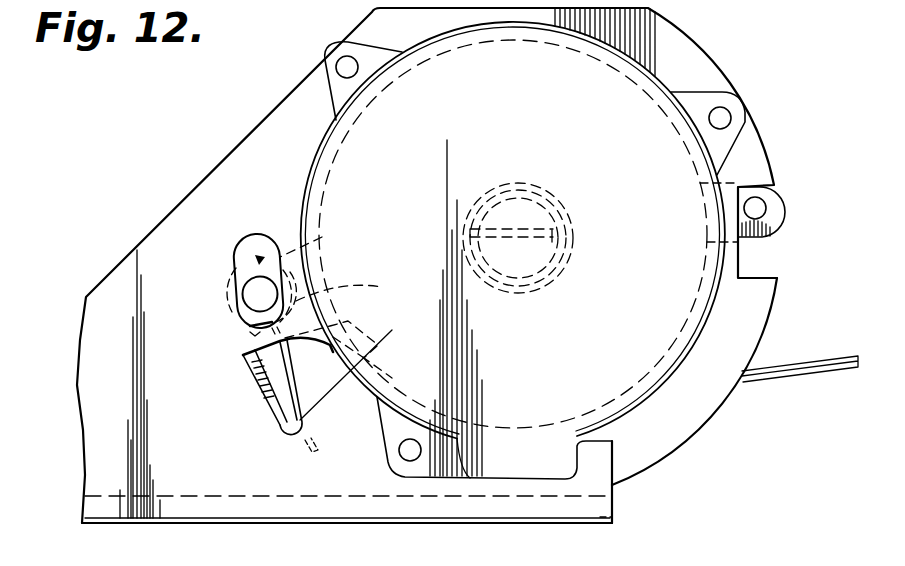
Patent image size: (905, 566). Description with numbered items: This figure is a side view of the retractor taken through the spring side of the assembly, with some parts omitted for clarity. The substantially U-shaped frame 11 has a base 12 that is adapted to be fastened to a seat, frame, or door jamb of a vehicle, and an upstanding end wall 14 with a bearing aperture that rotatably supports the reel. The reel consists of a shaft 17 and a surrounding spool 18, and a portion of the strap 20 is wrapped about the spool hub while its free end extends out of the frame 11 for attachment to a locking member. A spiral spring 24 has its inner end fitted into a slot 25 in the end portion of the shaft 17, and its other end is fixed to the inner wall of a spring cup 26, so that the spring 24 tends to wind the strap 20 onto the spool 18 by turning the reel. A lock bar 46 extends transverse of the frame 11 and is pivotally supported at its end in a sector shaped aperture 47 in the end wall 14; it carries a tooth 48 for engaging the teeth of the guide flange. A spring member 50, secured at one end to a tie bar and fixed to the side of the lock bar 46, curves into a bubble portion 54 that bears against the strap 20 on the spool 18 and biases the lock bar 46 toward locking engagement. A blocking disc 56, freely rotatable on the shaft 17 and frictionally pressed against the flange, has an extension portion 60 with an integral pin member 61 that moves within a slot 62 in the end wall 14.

The frame 11 is at (563, 523).
The base 12 is at (298, 522).
The end wall 14 is at (693, 78).
The shaft 17 is at (533, 262).
The spool 18 is at (430, 562).
The strap 20 is at (795, 382).
The spiral spring 24 is at (537, 182).
The slot 25 is at (560, 236).
The spring cup 26 is at (654, 400).
The lock bar 46 is at (297, 377).
The sector shaped aperture 47 is at (253, 370).
The tooth 48 is at (250, 335).
The spring member 50 is at (305, 402).
The bubble portion 54 is at (345, 307).
The blocking disc 56 is at (352, 165).
The extension portion 60 is at (262, 265).
The pin member 61 is at (258, 293).
The slot 62 is at (237, 246).